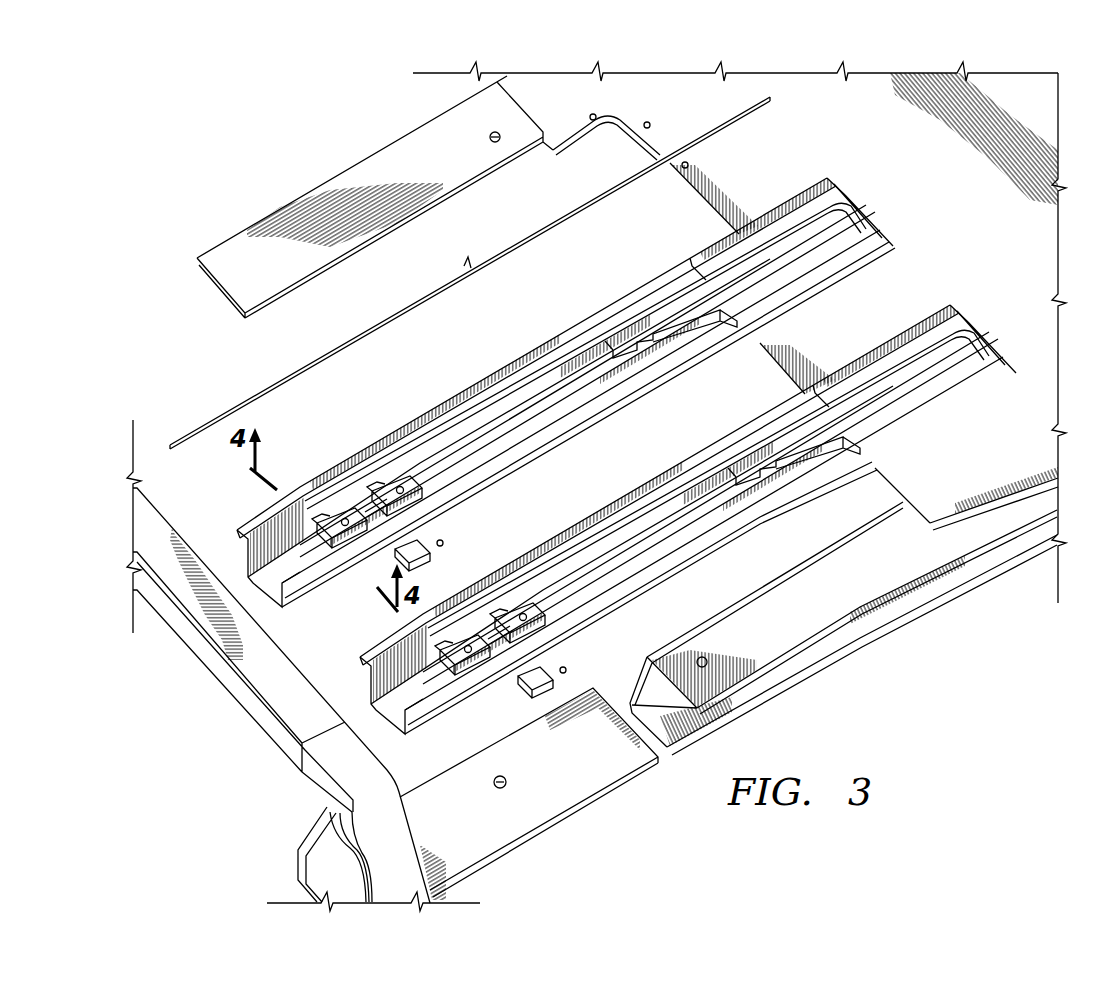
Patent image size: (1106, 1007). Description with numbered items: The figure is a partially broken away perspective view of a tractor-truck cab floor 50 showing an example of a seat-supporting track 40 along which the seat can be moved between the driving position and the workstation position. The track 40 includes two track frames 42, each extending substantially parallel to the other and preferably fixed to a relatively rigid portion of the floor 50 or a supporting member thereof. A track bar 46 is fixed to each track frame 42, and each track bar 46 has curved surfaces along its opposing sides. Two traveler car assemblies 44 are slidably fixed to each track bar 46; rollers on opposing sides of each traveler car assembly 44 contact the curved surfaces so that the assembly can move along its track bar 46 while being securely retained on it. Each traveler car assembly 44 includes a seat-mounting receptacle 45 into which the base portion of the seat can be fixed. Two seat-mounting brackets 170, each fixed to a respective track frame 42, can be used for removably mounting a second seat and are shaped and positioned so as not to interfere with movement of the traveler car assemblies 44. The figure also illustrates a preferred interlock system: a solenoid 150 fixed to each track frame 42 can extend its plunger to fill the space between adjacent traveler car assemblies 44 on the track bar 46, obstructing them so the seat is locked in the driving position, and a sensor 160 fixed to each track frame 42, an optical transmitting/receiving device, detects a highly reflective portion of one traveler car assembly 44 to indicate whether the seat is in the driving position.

The seat-supporting track 40 is at (470, 273).
The track frame 42 is at (880, 242).
The traveler car assembly 44 is at (403, 486).
The seat-mounting receptacle 45 is at (398, 488).
The track bar 46 is at (565, 406).
The floor 50 is at (950, 263).
The solenoid 150 is at (303, 590).
The sensor 160 is at (442, 543).
The seat-mounting bracket 170 is at (673, 313).